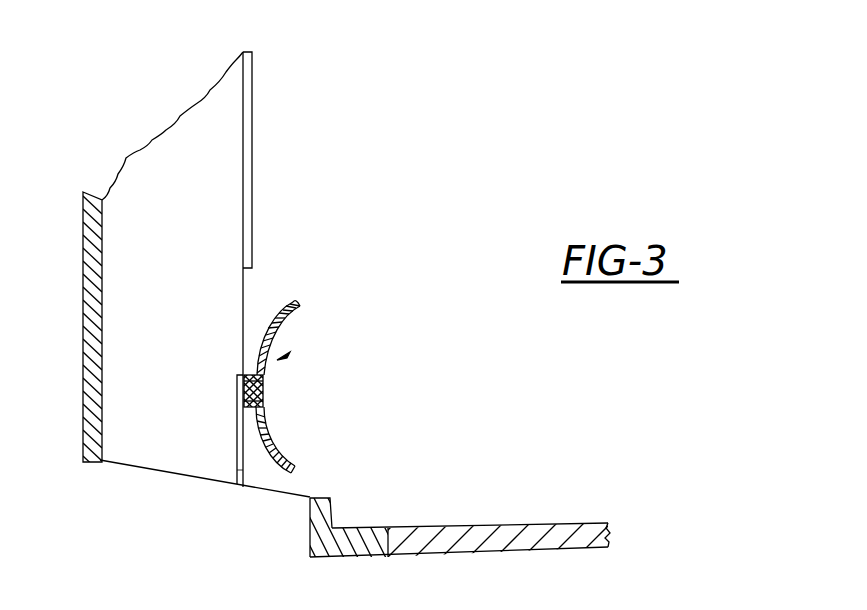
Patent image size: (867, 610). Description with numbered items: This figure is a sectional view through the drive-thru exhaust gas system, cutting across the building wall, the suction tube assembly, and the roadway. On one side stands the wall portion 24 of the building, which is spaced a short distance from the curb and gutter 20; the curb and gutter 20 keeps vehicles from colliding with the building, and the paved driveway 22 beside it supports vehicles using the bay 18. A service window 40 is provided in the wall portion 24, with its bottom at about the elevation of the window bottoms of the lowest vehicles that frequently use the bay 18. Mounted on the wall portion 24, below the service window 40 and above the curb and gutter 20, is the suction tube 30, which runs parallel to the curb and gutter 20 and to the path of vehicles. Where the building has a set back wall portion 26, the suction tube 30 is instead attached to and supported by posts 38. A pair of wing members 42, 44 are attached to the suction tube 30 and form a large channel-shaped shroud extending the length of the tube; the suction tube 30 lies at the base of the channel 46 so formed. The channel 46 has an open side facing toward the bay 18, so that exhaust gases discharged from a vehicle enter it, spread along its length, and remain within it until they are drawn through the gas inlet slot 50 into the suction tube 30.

The bay 18 is at (583, 523).
The curb and gutter 20 is at (333, 525).
The paved driveway 22 is at (490, 527).
The wall portion 24 is at (245, 313).
The set back wall portion 26 is at (102, 435).
The suction tube 30 is at (263, 393).
The post 38 is at (237, 470).
The service window 40 is at (247, 175).
The wing member 42 is at (281, 470).
The wing member 44 is at (300, 310).
The channel 46 is at (287, 357).
The gas inlet slot 50 is at (264, 383).